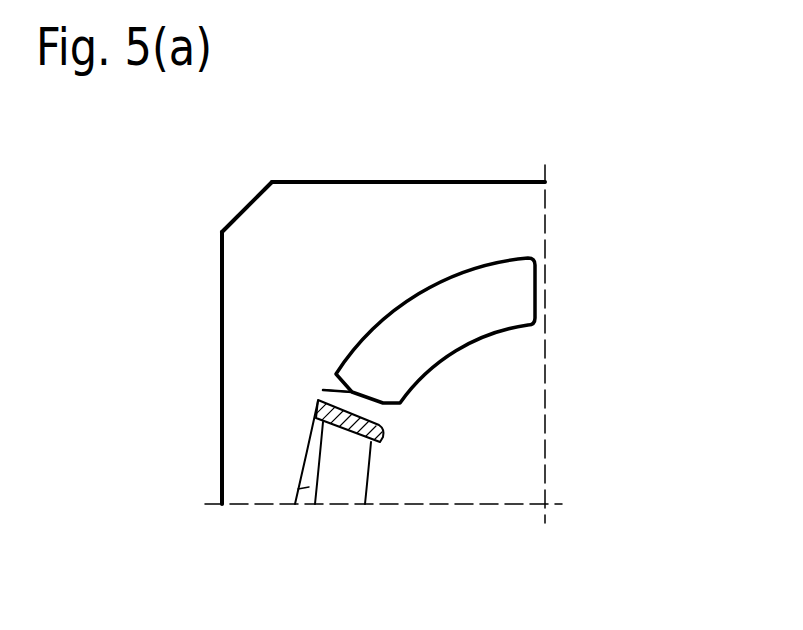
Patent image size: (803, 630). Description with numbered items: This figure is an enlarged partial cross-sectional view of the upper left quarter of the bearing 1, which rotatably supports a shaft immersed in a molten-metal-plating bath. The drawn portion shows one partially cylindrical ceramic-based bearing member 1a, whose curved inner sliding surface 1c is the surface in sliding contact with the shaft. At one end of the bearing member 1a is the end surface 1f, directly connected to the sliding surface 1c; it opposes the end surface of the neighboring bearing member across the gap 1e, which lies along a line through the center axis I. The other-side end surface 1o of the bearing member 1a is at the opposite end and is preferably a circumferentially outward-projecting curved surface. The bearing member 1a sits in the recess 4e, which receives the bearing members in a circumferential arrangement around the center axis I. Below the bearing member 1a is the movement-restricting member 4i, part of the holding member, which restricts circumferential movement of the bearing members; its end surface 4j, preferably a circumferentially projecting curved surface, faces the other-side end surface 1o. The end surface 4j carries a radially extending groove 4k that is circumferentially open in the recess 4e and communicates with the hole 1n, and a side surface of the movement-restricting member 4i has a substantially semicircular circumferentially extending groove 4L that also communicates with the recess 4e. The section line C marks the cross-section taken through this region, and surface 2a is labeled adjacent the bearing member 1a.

The bearing 1 is at (660, 309).
The bearing member 1a is at (412, 308).
The sliding surface 1c is at (512, 328).
The gap 1e is at (540, 256).
The end surface 1f is at (538, 291).
The hole 1n is at (525, 448).
The other-side end surface 1o is at (350, 400).
The outer surface 2a is at (433, 283).
The recess 4e is at (324, 388).
The movement-restricting member 4i is at (359, 528).
The end surface 4j is at (316, 409).
The radially extending groove 4k is at (350, 434).
The circumferentially extending groove 4L is at (307, 488).
The section line C- C is at (332, 388).
The center axis I is at (545, 504).